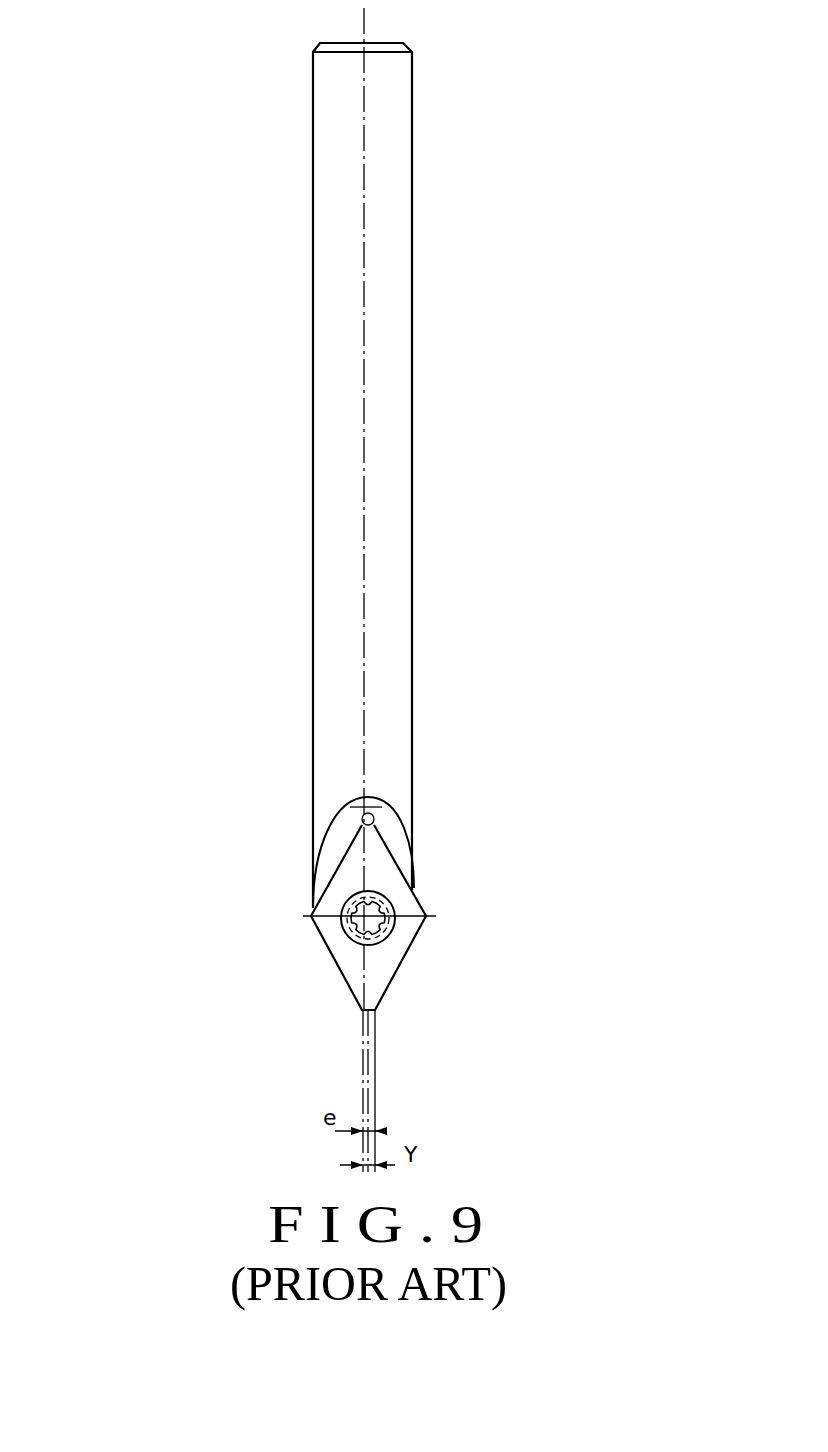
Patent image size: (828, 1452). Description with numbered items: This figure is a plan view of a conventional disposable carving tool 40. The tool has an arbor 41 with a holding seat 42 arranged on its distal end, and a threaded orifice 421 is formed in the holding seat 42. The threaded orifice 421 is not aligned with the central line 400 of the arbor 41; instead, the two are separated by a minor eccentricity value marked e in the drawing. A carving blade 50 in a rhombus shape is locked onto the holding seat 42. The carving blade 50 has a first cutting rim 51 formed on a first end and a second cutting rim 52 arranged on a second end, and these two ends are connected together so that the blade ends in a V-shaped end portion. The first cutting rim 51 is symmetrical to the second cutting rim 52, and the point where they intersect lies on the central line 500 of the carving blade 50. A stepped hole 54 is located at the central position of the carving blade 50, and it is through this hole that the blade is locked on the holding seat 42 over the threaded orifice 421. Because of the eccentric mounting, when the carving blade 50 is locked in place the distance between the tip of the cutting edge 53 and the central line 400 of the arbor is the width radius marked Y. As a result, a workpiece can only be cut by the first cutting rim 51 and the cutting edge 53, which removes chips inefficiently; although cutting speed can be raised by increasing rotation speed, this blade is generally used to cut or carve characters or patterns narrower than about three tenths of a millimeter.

The disposable carving tool 40 is at (365, 475).
The arbor 41 is at (396, 593).
The central line of the arbor 400 is at (364, 670).
The holding seat 42 is at (338, 862).
The threaded orifice 421 is at (390, 913).
The carving blade 50 is at (424, 976).
The central line of the carving blade 500 is at (372, 960).
The first cutting rim 51 is at (398, 973).
The second cutting rim 52 is at (333, 958).
The cutting edge 53 is at (375, 1012).
The stepped hole 54 is at (355, 882).